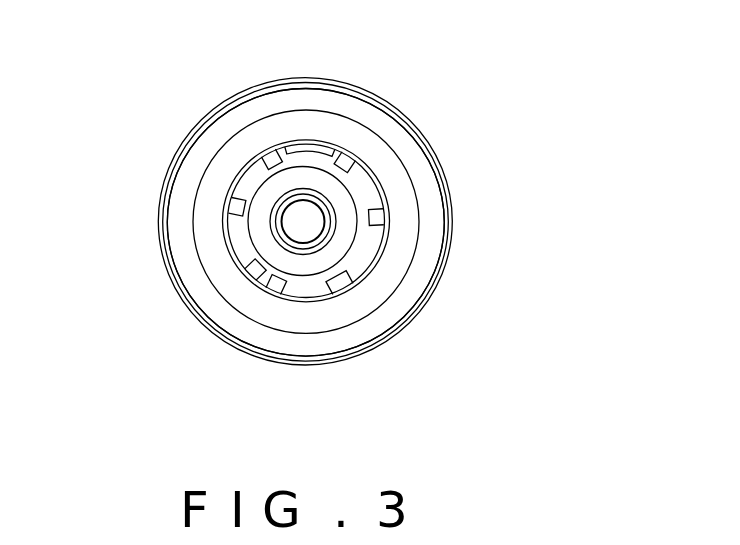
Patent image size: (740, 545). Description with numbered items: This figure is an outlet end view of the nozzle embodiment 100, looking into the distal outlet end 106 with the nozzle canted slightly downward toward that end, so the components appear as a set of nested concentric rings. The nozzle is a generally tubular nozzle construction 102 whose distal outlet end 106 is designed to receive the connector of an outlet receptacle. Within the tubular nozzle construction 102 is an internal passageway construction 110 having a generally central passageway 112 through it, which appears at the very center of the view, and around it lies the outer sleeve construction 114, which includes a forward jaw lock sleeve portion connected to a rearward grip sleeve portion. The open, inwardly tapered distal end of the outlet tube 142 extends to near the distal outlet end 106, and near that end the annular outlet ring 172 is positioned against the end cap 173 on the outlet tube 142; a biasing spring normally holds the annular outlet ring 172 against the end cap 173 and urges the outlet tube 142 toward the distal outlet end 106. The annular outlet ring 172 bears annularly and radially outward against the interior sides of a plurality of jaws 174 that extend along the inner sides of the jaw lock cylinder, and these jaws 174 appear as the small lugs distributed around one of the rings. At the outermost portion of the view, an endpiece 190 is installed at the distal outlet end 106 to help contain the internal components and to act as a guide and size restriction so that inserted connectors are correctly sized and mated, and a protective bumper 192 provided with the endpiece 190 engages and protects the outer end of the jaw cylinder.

The nozzle embodiment 100 is at (388, 85).
The tubular nozzle construction 102 is at (430, 124).
The distal outlet end 106 is at (432, 233).
The internal passageway construction 110 is at (250, 143).
The central passageway 112 is at (299, 224).
The outer sleeve construction 114 is at (418, 307).
The outlet tube 142 is at (278, 197).
The annular outlet ring 172 is at (302, 268).
The end cap 173 is at (262, 272).
The jaws 174 is at (292, 148).
The endpiece 190 is at (341, 312).
The protective bumper 192 is at (393, 320).